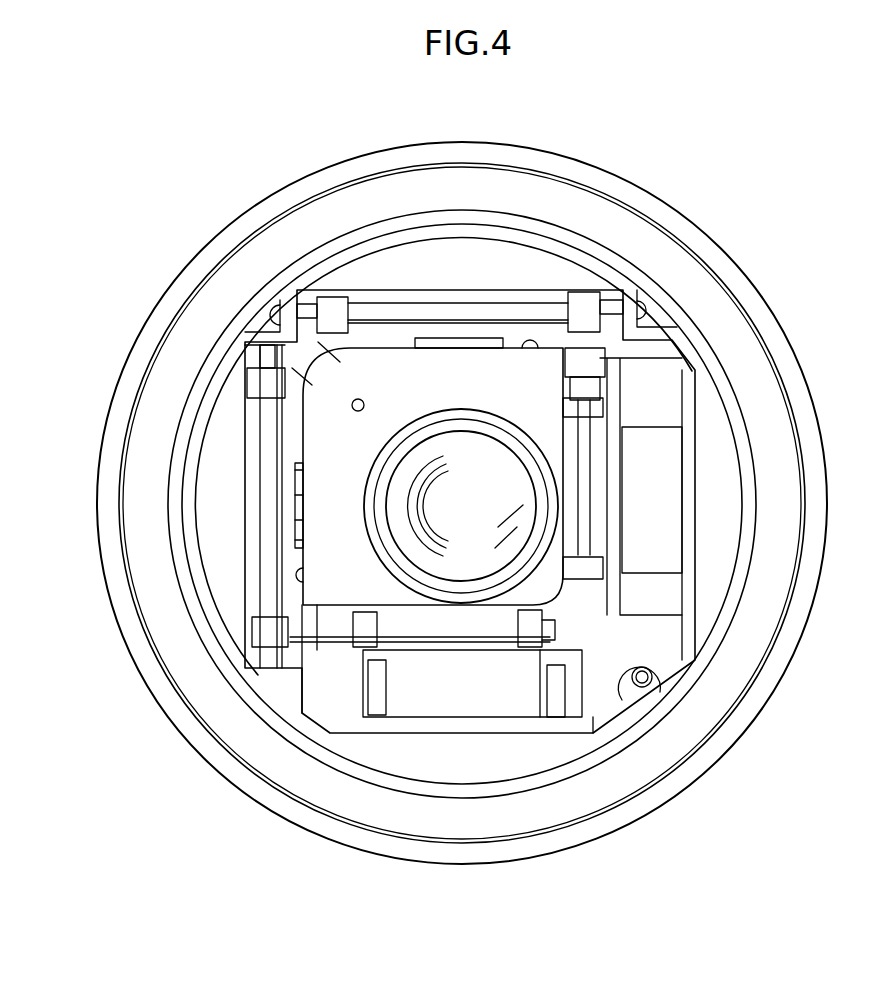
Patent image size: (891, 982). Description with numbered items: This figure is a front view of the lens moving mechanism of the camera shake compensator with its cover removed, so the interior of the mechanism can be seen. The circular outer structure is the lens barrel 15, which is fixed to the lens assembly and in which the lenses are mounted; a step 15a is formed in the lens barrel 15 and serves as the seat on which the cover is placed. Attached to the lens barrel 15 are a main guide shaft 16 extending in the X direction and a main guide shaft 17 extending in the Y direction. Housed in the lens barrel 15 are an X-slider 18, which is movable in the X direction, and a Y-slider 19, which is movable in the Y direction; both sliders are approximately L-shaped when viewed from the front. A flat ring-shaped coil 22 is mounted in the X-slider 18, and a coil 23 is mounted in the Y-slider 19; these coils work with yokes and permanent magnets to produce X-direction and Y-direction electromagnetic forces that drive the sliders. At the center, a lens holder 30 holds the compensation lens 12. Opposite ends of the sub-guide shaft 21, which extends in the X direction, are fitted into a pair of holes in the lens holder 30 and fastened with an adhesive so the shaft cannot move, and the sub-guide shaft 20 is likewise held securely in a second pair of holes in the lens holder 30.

The compensation lens 12 is at (458, 437).
The lens barrel 15 is at (243, 230).
The step 15a is at (597, 265).
The main guide shaft 16 is at (250, 522).
The main guide shaft 17 is at (488, 305).
The X-slider 18 is at (288, 433).
The Y-slider 19 is at (388, 330).
The sub-guide shaft 20 is at (440, 628).
The sub-guide shaft 21 is at (588, 476).
The coil 22 is at (500, 706).
The coil 23 is at (670, 543).
The lens holder 30 is at (323, 557).